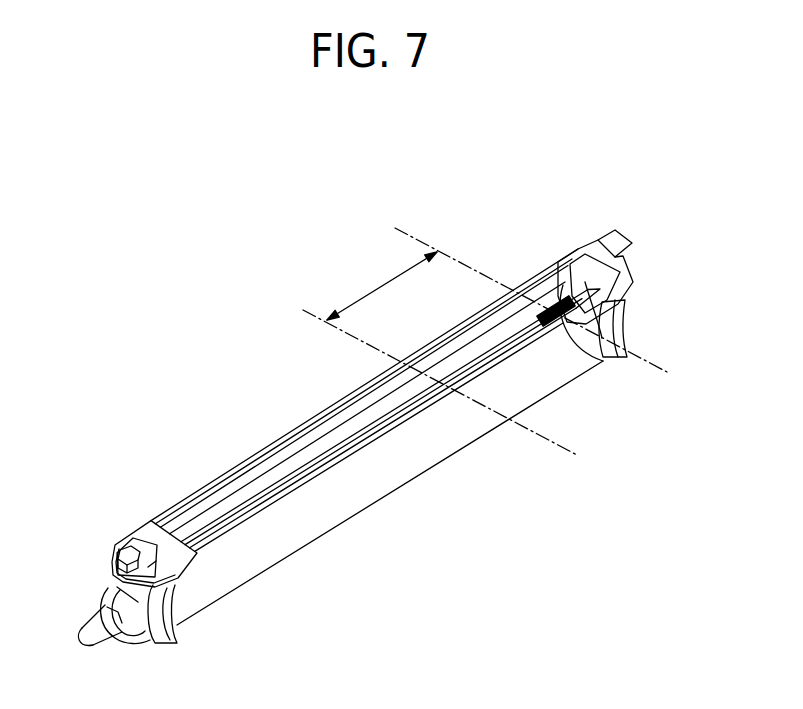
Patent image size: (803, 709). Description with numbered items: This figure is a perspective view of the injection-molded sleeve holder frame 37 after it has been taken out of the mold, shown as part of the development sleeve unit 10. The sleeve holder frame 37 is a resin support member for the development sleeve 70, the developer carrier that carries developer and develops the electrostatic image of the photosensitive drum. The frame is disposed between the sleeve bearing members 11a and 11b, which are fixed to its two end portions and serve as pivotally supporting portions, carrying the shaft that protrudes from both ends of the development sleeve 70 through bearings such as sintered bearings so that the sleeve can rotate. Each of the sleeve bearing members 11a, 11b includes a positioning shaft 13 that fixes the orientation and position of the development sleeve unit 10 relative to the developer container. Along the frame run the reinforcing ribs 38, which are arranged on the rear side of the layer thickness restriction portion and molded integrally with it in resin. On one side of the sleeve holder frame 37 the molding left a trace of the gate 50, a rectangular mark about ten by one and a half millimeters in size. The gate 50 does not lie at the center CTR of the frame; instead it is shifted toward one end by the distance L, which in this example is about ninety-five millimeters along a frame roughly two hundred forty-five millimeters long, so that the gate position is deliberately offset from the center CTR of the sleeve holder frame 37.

The development sleeve unit 10 is at (224, 290).
The sleeve bearing member 11a is at (136, 607).
The sleeve bearing member 11b is at (634, 284).
The positioning shaft 13 is at (110, 563).
The sleeve holder frame 37 is at (402, 352).
The reinforcing ribs 38 is at (297, 444).
The gate 50 is at (565, 330).
The development sleeve 70 is at (438, 462).
The center CTR is at (469, 350).
The distance L is at (382, 285).